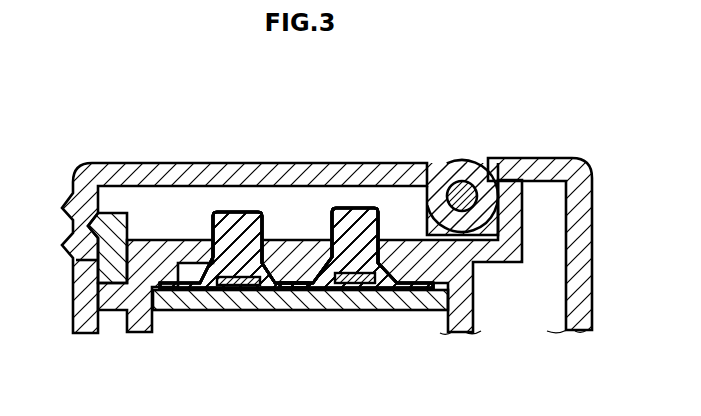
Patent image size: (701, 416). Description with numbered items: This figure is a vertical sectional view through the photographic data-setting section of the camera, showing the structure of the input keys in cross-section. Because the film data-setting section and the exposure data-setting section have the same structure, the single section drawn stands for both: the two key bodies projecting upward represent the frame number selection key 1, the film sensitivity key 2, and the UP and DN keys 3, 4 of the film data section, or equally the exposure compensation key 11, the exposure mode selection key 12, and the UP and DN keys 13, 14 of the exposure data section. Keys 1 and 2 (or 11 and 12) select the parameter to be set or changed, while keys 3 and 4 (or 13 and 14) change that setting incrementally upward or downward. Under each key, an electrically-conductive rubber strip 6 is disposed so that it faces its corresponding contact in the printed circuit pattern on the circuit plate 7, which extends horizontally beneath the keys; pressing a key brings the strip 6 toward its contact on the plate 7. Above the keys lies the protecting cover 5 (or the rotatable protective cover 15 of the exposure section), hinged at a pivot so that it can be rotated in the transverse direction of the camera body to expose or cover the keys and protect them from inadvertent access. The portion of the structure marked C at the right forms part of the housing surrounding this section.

The frame number selection key 1 is at (343, 218).
The film sensitivity key 2 is at (296, 184).
The UP key 3 is at (296, 184).
The DN key 4 is at (296, 184).
The exposure compensation key 11 is at (296, 184).
The exposure mode selection key 12 is at (296, 184).
The UP key 13 is at (296, 184).
The DN key 14 is at (296, 184).
The protecting cover 5 is at (396, 170).
The rotatable protective cover 15 is at (436, 145).
The electrically-conductive rubber strips 6 is at (352, 284).
The circuit plate 7 is at (210, 303).
The connector housing C is at (539, 157).